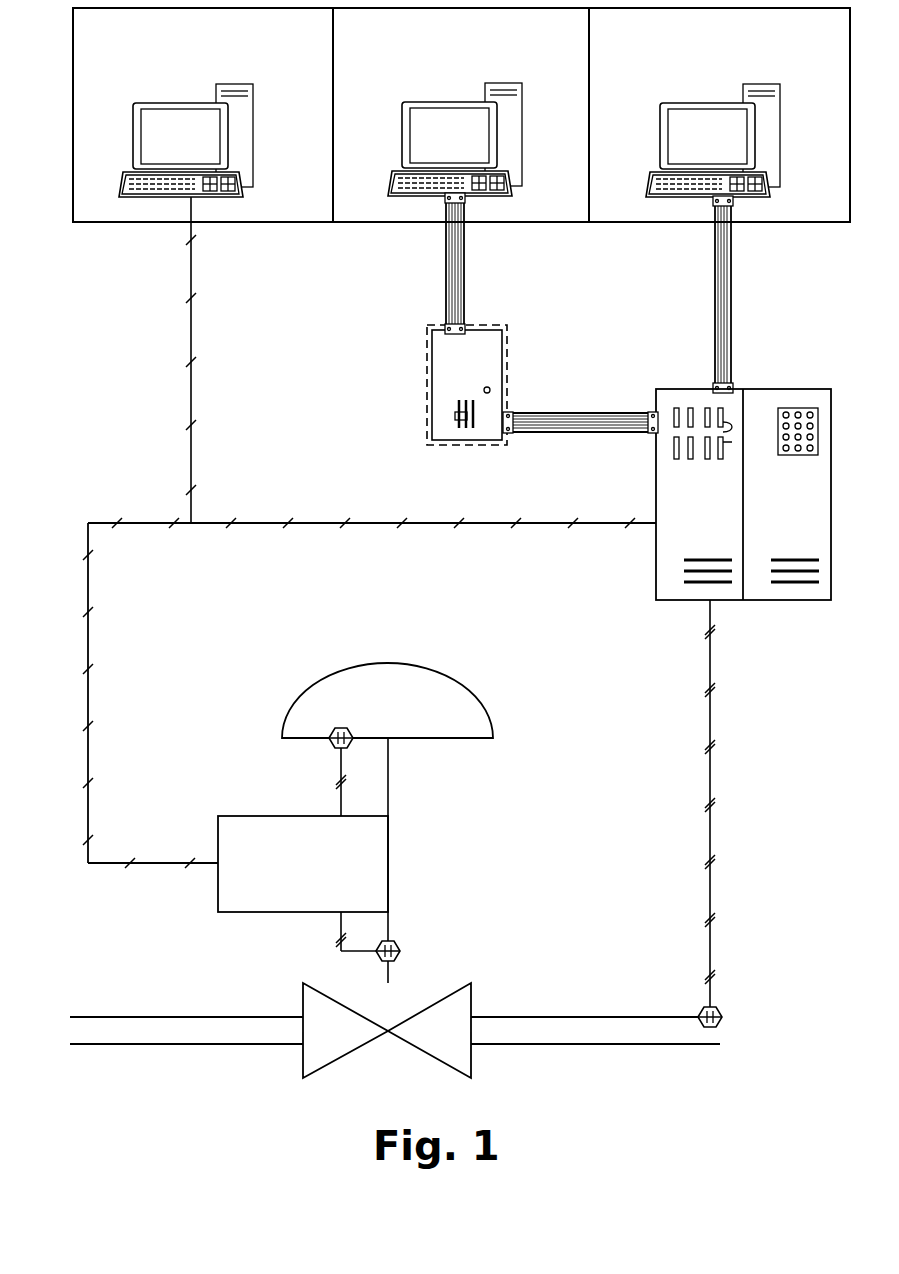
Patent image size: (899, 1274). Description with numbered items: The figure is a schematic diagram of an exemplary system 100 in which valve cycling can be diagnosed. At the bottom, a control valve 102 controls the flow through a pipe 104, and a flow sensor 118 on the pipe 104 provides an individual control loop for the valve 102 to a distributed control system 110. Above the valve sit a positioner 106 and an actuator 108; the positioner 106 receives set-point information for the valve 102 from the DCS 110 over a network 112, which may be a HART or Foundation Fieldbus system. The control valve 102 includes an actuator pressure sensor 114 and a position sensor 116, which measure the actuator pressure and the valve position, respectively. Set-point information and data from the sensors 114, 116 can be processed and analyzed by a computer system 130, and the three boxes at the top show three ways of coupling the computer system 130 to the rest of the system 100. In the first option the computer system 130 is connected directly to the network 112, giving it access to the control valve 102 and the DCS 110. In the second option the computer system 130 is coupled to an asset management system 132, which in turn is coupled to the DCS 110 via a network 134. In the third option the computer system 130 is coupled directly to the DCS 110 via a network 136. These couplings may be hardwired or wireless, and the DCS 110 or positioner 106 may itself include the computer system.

The system 100 is at (75, 418).
The control valve 102 is at (345, 1058).
The pipe 104 is at (560, 1017).
The positioner 106 is at (361, 816).
The actuator 108 is at (372, 663).
The distributed control system 110 is at (656, 552).
The network 112 is at (88, 586).
The actuator pressure sensor 114 is at (335, 748).
The position sensor 116 is at (398, 943).
The flow sensor 118 is at (722, 1008).
The computer system 130 is at (203, 198).
The asset management system 132 is at (427, 392).
The network 134 is at (572, 413).
The network 136 is at (733, 292).